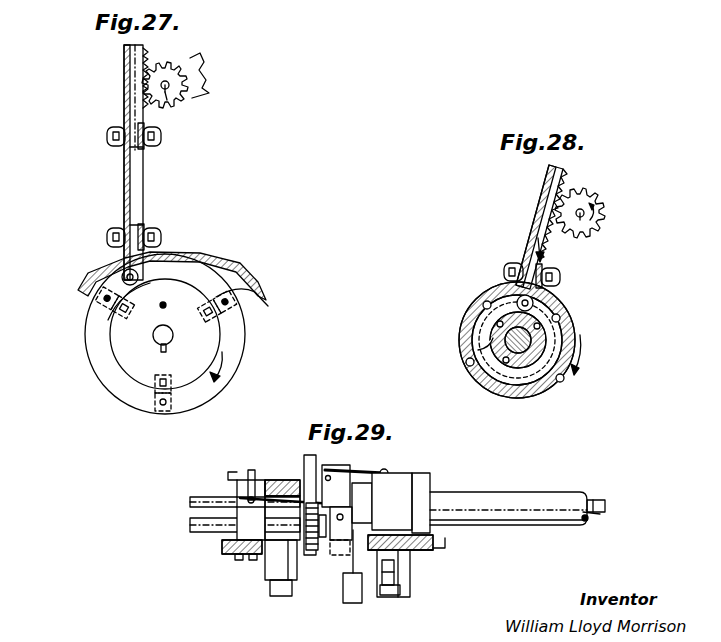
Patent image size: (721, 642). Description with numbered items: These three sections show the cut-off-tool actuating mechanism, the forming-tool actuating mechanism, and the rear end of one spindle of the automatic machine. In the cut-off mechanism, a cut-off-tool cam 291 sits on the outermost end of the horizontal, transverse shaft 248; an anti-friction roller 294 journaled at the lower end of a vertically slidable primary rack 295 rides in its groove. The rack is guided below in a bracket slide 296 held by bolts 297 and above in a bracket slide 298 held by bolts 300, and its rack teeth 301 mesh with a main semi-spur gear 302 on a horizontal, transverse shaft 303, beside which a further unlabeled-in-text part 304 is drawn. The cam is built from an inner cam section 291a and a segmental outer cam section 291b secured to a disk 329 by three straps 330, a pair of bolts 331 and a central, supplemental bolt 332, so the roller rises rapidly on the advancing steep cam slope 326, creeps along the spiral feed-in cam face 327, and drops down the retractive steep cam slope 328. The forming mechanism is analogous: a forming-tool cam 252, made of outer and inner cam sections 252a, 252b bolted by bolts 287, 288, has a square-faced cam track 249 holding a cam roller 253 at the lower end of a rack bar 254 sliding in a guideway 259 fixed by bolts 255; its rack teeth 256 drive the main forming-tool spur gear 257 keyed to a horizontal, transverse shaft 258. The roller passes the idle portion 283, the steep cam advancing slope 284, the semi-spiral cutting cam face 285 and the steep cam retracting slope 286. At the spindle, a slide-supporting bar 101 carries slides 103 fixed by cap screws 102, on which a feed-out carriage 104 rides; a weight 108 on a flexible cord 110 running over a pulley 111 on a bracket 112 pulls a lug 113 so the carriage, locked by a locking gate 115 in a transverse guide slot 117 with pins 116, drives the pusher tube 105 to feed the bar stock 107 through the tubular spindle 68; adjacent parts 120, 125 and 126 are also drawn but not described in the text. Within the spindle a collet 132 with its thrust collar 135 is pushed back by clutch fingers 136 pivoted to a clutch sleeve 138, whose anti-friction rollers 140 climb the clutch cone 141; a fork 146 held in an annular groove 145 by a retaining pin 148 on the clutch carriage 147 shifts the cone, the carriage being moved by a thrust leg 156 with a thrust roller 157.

In FIG. 27, the primary rack 295 is at (125, 181).
In FIG. 27, the rack teeth 301 is at (148, 50).
In FIG. 27, the horizontal, transverse shaft 303 is at (172, 85).
In FIG. 27, the pawl 304 is at (200, 62).
In FIG. 27, the main, mutilated or semi-spur gear 302 is at (172, 105).
In FIG. 27, the bolts 300 is at (107, 135).
In FIG. 27, the bracket slide 298 is at (145, 150).
In FIG. 27, the bracket slide 296 is at (150, 222).
In FIG. 27, the bolts 297 is at (107, 237).
In FIG. 27, the outer cam section 291b is at (80, 282).
In FIG. 27, the advancing steep cam slope 326 is at (112, 303).
In FIG. 27, the retractive, steep cam slope 328 is at (252, 296).
In FIG. 27, the anti-friction roller 294 is at (120, 283).
In FIG. 27, the inner cam section 291a is at (95, 350).
In FIG. 27, the cut-off-tool cam 291 is at (115, 362).
In FIG. 27, the horizontal, transverse shaft 248 is at (158, 345).
In FIG. 28, the horizontal, transverse shaft 248 is at (547, 334).
In FIG. 27, the central, supplemental bolt 332 is at (160, 306).
In FIG. 27, the straps 330 is at (165, 412).
In FIG. 27, the bolts 331 is at (118, 320).
In FIG. 27, the spiral feed-in cam face 327 is at (137, 410).
In FIG. 27, the disk 329 is at (215, 345).
In FIG. 28, the rack bar 254 is at (552, 172).
In FIG. 28, the rack teeth 256 is at (566, 172).
In FIG. 28, the guideway 259 is at (543, 196).
In FIG. 28, the main, forming-tool spur gear 257 is at (606, 212).
In FIG. 28, the horizontal, transverse shaft 258 is at (594, 205).
In FIG. 28, the bolts 255 is at (512, 265).
In FIG. 28, the forming-tool cam 252 is at (565, 388).
In FIG. 28, the cam track 249 is at (517, 398).
In FIG. 28, the steep cam advancing slope 284 is at (505, 300).
In FIG. 28, the cam roller 253 is at (484, 308).
In FIG. 28, the idle portion 283 is at (560, 320).
In FIG. 28, the semi-spiral cutting cam face 285 is at (498, 326).
In FIG. 28, the inner cam section 252b is at (490, 345).
In FIG. 28, the steep cam retracting slope 286 is at (474, 368).
In FIG. 28, the outer cam section 252a is at (500, 380).
In FIG. 28, the bolts 287 is at (565, 380).
In FIG. 28, the bolts 288 is at (578, 372).
In FIG. 29, the bar stock 107 is at (190, 500).
In FIG. 29, the carriage ways or slides 103 is at (192, 526).
In FIG. 29, the lug 113 is at (243, 495).
In FIG. 29, the transverse guide slot 117 is at (253, 470).
In FIG. 29, the pins 116 is at (235, 472).
In FIG. 29, the feed-out carriage 104 is at (250, 480).
In FIG. 29, the locking gate 115 is at (262, 470).
In FIG. 29, the bearing block 120 is at (292, 480).
In FIG. 29, the slide-supporting bar or beam 101 is at (222, 547).
In FIG. 29, the cap screws 102 is at (237, 557).
In FIG. 29, the housing 125 is at (268, 572).
In FIG. 29, the housing cap 126 is at (276, 588).
In FIG. 29, the clutch sleeve 138 is at (306, 456).
In FIG. 29, the thrust ring or collar 135 is at (310, 455).
In FIG. 29, the bracket 112 is at (330, 548).
In FIG. 29, the clutch fingers 136 is at (335, 465).
In FIG. 29, the pulley 111 is at (345, 510).
In FIG. 29, the clutch cone 141 is at (390, 470).
In FIG. 29, the anti-friction rollers 140 is at (385, 480).
In FIG. 29, the annular grooves 145 is at (428, 472).
In FIG. 29, the tubular spindle 68 is at (548, 492).
In FIG. 29, the feed-out sleeve or pusher tube 105 is at (600, 512).
In FIG. 29, the draw chuck or collet 132 is at (590, 520).
In FIG. 29, the retaining pin 148 is at (448, 540).
In FIG. 29, the clutch carriage 147 is at (430, 552).
In FIG. 29, the fork 146 is at (408, 560).
In FIG. 29, the thrust leg 156 is at (404, 585).
In FIG. 29, the thrust roller 157 is at (398, 600).
In FIG. 29, the flexible cord 110 is at (352, 560).
In FIG. 29, the weight 108 is at (352, 604).